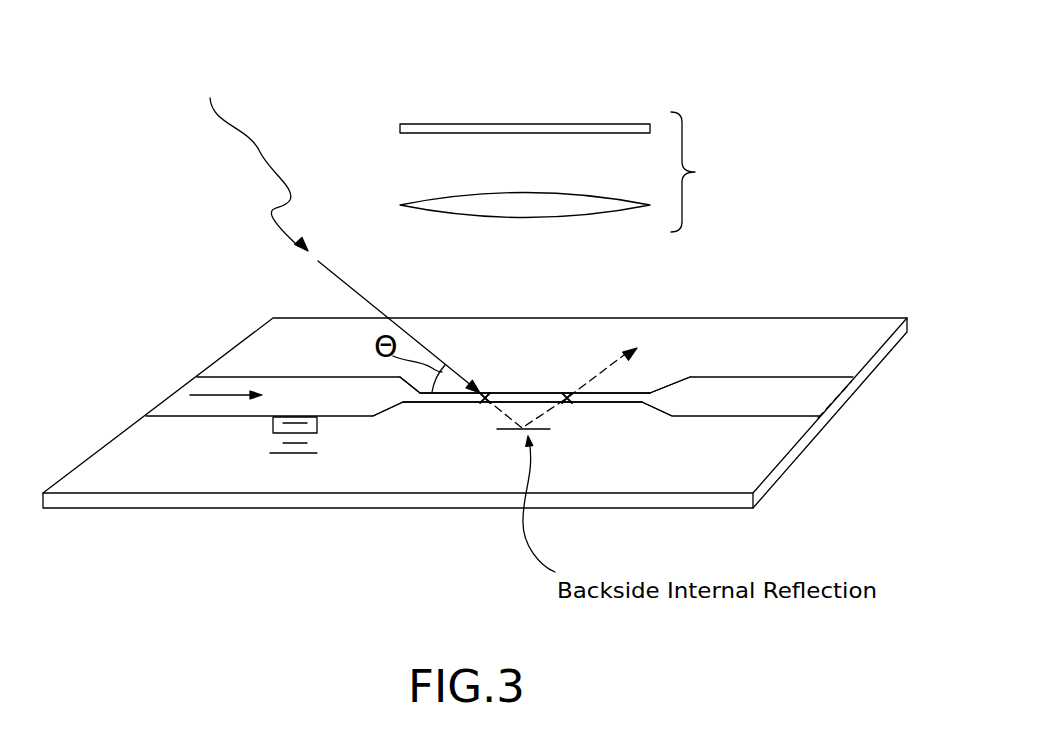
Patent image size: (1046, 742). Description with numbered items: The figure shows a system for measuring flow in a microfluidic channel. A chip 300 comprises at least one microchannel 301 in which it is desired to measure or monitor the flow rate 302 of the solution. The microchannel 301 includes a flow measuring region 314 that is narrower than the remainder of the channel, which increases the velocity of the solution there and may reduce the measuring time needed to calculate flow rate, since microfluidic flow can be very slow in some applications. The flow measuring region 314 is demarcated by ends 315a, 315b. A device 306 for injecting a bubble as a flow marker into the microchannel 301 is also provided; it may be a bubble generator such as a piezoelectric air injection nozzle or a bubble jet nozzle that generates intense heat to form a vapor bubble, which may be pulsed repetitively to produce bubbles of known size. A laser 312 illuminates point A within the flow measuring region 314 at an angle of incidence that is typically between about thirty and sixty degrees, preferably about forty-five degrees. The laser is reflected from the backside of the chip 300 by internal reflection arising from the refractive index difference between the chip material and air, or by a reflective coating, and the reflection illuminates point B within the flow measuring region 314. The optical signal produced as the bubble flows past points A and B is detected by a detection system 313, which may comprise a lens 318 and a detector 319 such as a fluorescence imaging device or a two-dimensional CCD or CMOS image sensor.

The chip 300 is at (240, 358).
The microchannel 301 is at (332, 388).
The flow rate 302 is at (222, 395).
The device for injecting a bubble 306 is at (312, 453).
The laser 312 is at (412, 245).
The detection system 313 is at (711, 172).
The flow measuring region 314 is at (525, 393).
The end of flow measuring region 315a is at (400, 403).
The end of flow measuring region 315b is at (642, 405).
The lens 318 is at (403, 204).
The detector 319 is at (400, 126).
The point A is at (468, 405).
The point B is at (584, 423).